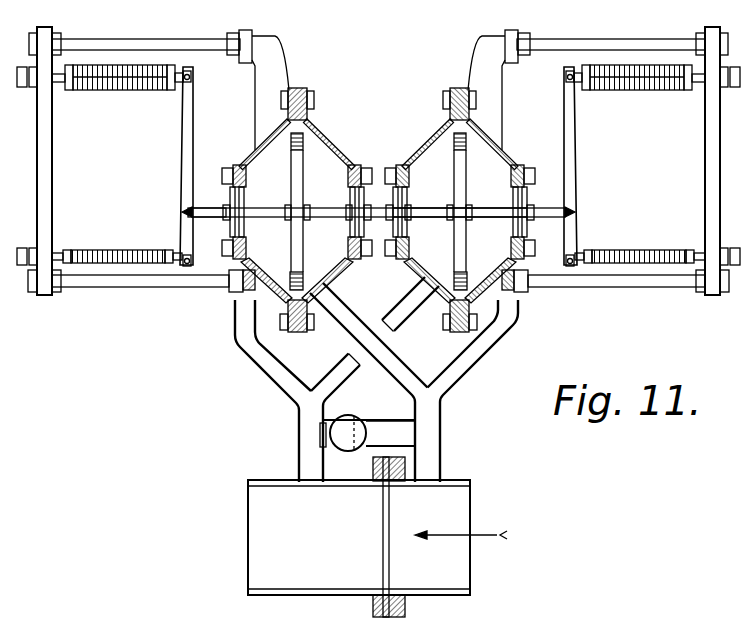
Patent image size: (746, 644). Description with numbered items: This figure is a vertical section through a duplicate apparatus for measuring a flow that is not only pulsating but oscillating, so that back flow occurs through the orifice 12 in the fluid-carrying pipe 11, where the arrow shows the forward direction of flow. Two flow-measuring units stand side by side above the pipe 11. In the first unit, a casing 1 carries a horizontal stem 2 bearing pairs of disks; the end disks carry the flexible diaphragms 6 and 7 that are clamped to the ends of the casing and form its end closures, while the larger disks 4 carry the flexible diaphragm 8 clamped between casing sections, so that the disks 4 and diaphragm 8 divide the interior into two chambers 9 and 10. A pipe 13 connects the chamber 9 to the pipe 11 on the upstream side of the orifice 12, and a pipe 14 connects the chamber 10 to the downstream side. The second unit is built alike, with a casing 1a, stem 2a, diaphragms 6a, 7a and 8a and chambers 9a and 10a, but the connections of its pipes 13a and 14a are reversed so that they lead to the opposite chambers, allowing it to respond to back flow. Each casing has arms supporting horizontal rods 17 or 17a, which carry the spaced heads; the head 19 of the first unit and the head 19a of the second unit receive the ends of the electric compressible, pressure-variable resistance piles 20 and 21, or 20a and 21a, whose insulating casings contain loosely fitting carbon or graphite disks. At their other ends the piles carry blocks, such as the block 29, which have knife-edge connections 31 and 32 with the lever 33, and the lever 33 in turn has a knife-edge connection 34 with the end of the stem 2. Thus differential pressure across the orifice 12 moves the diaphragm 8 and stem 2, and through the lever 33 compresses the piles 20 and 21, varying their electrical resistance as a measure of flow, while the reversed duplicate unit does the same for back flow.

The casing 1 is at (298, 225).
The casing 1a is at (460, 223).
The stem 2 is at (263, 214).
The stem 2a is at (480, 210).
The disks 4 is at (290, 177).
The flexible diaphragm 6 is at (243, 190).
The flexible diaphragm 6a is at (521, 192).
The flexible diaphragm 7 is at (350, 190).
The flexible diaphragm 7a is at (404, 188).
The flexible diaphragm 8 is at (300, 127).
The flexible diaphragm 8a is at (462, 128).
The chamber 9 is at (327, 274).
The chamber 9a is at (429, 274).
The chamber 10 is at (266, 276).
The chamber 10a is at (490, 274).
The pipe 11 is at (377, 537).
The orifice 12 is at (383, 548).
The pipe 13 is at (336, 312).
The pipe 13a is at (459, 379).
The pipe 14 is at (250, 336).
The pipe 14a is at (386, 333).
The horizontal rods 17 is at (140, 42).
The horizontal rods 17a is at (605, 46).
The head 19 is at (45, 165).
The head 19a is at (709, 140).
The pressure-variable resistance-pile 20 is at (112, 91).
The pressure-variable resistance-pile 20a is at (647, 92).
The pressure-variable resistance-pile 21 is at (109, 250).
The pressure-variable resistance-pile 21a is at (633, 254).
The block 29 is at (172, 91).
The knife-edge connection 31 is at (192, 80).
The knife-edge connection 32 is at (187, 267).
The lever 33 is at (188, 140).
The knife-edge connection 34 is at (182, 210).